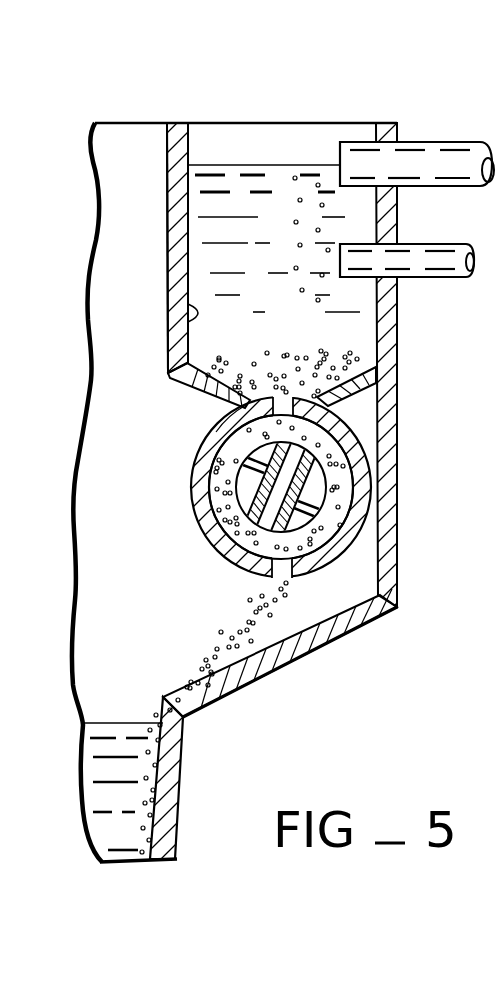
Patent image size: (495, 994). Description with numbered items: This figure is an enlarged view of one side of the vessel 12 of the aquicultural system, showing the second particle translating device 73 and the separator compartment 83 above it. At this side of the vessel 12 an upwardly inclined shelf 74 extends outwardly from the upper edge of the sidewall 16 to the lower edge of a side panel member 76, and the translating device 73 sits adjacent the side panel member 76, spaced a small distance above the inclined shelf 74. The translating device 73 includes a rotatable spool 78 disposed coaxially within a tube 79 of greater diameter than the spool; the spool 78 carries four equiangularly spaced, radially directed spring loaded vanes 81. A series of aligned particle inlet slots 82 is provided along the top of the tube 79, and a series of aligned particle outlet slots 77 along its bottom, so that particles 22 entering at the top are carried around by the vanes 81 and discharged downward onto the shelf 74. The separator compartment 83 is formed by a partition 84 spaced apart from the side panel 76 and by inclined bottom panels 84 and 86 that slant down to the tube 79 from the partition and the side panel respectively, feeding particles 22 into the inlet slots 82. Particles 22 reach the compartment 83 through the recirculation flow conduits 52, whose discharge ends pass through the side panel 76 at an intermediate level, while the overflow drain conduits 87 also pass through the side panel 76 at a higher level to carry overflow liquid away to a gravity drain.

The vessel 12 is at (402, 632).
The sidewall 16 is at (177, 790).
The particles 22 is at (260, 348).
The recirculation flow conduit 52 is at (435, 245).
The second particle translating device 73 is at (195, 452).
The inclined shelf 74 is at (287, 667).
The side panel member 76 is at (398, 556).
The particle outlet slot 77 is at (283, 578).
The rotatable spool 78 is at (255, 483).
The tube 79 is at (215, 553).
The spring loaded vane 81 is at (227, 442).
The particle inlet slot 82 is at (284, 396).
The separator compartment 83 is at (188, 316).
The partition 84 is at (213, 372).
The inclined bottom panel 86 is at (352, 395).
The overflow drain conduit 87 is at (437, 144).